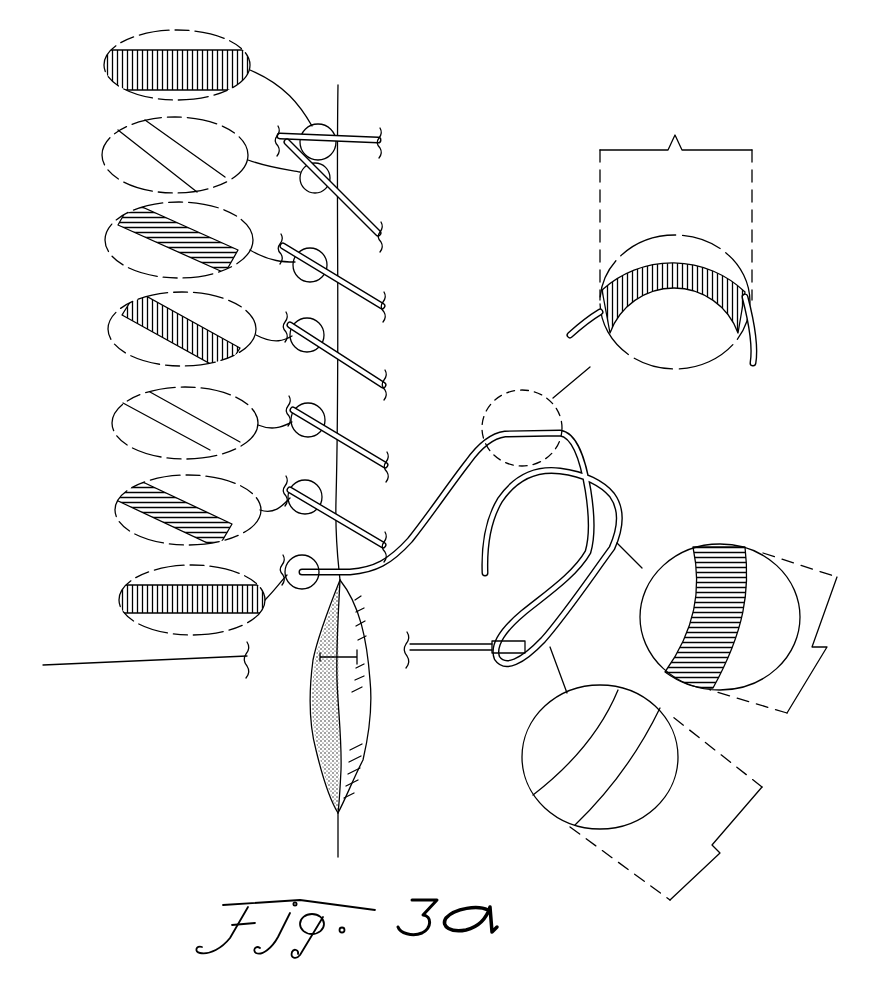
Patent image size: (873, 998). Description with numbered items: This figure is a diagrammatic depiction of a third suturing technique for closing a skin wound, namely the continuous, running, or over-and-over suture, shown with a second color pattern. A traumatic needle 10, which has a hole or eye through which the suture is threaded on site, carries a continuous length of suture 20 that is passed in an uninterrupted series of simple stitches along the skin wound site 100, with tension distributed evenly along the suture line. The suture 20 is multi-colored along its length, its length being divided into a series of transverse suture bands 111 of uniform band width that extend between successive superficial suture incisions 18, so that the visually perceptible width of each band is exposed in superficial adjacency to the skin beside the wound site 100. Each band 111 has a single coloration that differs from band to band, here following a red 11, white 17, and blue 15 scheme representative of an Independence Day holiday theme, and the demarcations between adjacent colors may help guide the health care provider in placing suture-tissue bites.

The traumatic needle 10 is at (173, 661).
The red suture color 11 is at (115, 62).
The blue suture color 15 is at (132, 232).
The white suture color 17 is at (148, 138).
The superficial suture incisions 18 is at (380, 135).
The suture 20 is at (587, 460).
The skin wound site 100 is at (283, 744).
The transverse suture bands 111 is at (664, 112).